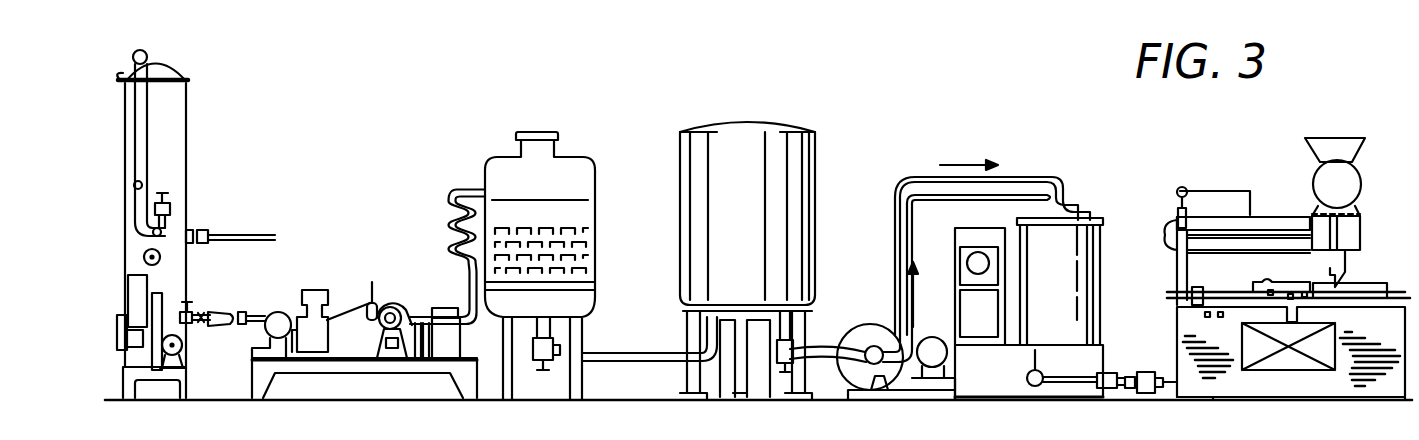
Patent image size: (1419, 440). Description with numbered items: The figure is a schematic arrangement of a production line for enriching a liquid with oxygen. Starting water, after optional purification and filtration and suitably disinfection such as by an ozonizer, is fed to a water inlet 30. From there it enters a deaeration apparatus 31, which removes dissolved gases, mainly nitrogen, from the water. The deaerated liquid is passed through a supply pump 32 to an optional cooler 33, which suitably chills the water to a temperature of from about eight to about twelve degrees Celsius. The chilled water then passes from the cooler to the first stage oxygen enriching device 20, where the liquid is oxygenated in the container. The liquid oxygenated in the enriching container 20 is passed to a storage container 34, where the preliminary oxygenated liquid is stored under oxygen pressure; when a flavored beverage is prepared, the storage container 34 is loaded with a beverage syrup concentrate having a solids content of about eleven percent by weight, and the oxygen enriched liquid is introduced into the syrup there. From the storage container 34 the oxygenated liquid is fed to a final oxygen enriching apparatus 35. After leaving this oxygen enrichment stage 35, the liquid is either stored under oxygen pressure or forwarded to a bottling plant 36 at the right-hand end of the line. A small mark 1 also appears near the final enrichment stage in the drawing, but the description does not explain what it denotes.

The receiving tank 1 is at (1108, 183).
The first stage oxygen enriching device 20 is at (568, 170).
The water inlet 30 is at (283, 237).
The deaeration apparatus 31 is at (177, 130).
The supply pump 32 is at (353, 390).
The cooler 33 is at (451, 229).
The storage container 34 is at (735, 130).
The final oxygen enriching apparatus 35 is at (1020, 178).
The bottling plant 36 is at (1226, 190).